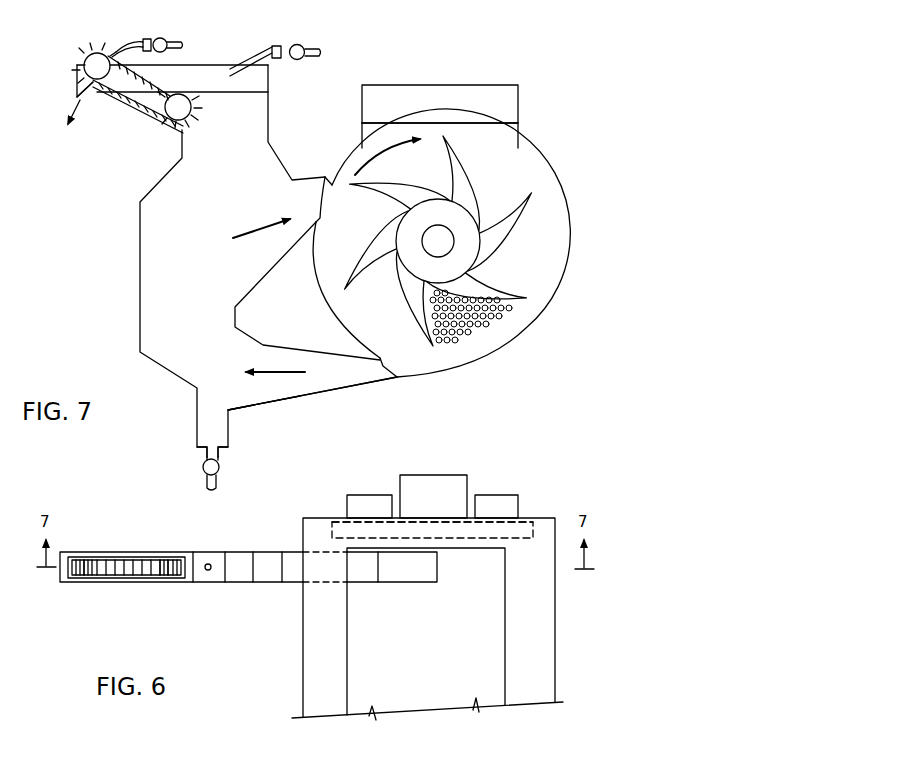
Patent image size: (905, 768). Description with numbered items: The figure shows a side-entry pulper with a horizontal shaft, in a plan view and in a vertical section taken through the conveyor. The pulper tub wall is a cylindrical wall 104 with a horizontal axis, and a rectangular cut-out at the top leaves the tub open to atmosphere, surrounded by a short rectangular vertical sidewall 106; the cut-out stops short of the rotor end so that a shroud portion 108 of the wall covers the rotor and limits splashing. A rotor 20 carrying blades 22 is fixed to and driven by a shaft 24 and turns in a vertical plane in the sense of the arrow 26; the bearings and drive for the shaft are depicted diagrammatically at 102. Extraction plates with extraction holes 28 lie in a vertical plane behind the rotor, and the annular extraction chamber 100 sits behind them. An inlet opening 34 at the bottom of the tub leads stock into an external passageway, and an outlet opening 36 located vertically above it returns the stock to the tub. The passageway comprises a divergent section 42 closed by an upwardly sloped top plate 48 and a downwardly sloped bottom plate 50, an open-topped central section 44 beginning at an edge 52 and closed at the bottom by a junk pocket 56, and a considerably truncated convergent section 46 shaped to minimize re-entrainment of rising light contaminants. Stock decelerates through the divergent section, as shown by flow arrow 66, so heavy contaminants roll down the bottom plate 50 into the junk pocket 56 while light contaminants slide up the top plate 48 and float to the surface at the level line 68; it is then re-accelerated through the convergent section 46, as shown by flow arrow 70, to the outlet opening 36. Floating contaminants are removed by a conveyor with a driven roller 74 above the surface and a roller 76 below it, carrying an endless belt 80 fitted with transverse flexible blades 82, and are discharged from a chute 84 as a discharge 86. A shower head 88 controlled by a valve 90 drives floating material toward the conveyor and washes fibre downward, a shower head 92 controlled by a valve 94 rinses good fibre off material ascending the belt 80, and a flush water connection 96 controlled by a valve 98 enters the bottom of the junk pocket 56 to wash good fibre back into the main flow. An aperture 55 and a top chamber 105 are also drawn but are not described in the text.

In FIG. 7, the rotor 20 is at (460, 253).
In FIG. 6, the rotor 20 is at (524, 540).
In FIG. 7, the blades 22 is at (376, 244).
In FIG. 7, the shaft 24 is at (440, 236).
In FIG. 7, the arrow 26 is at (387, 157).
In FIG. 7, the extraction holes 28 is at (503, 312).
In FIG. 7, the inlet opening 34 is at (388, 374).
In FIG. 6, the inlet opening 34 is at (412, 578).
In FIG. 7, the outlet opening 36 is at (378, 190).
In FIG. 7, the divergent section 42 is at (312, 388).
In FIG. 7, the central section 44 is at (237, 261).
In FIG. 7, the convergent section 46 is at (298, 199).
In FIG. 7, the top plate 48 is at (293, 346).
In FIG. 7, the bottom plate 50 is at (316, 398).
In FIG. 7, the edge 52 is at (268, 66).
In FIG. 6, the edge 52 is at (258, 566).
In FIG. 6, the aperture 55 is at (211, 562).
In FIG. 7, the junk pocket 56 is at (230, 437).
In FIG. 7, the flow arrow 66 is at (275, 364).
In FIG. 7, the level line 68 is at (224, 90).
In FIG. 7, the flow arrow 70 is at (261, 226).
In FIG. 7, the roller 74 is at (86, 58).
In FIG. 6, the roller 74 is at (90, 572).
In FIG. 7, the roller 76 is at (194, 108).
In FIG. 6, the roller 76 is at (166, 572).
In FIG. 7, the endless belt 80 is at (145, 108).
In FIG. 6, the endless belt 80 is at (121, 562).
In FIG. 7, the transverse flexible blades 82 is at (100, 50).
In FIG. 6, the transverse flexible blades 82 is at (152, 568).
In FIG. 7, the chute 84 is at (96, 90).
In FIG. 7, the discharge 86 is at (67, 124).
In FIG. 7, the shower head 88 is at (270, 46).
In FIG. 7, the valve 90 is at (301, 45).
In FIG. 7, the shower head 92 is at (141, 43).
In FIG. 7, the valve 94 is at (164, 39).
In FIG. 7, the flush water connection 96 is at (200, 455).
In FIG. 7, the valve 98 is at (219, 468).
In FIG. 6, the annular extraction chamber 100 is at (364, 502).
In FIG. 6, the bearings and drive 102 is at (424, 482).
In FIG. 7, the cylindrical wall 104 is at (558, 208).
In FIG. 6, the cylindrical wall 104 is at (558, 640).
In FIG. 7, the top chamber 105 is at (452, 90).
In FIG. 7, the rectangular vertical sidewall 106 is at (361, 112).
In FIG. 6, the rectangular vertical sidewall 106 is at (466, 548).
In FIG. 7, the shroud portion 108 is at (440, 111).
In FIG. 6, the shroud portion 108 is at (338, 528).